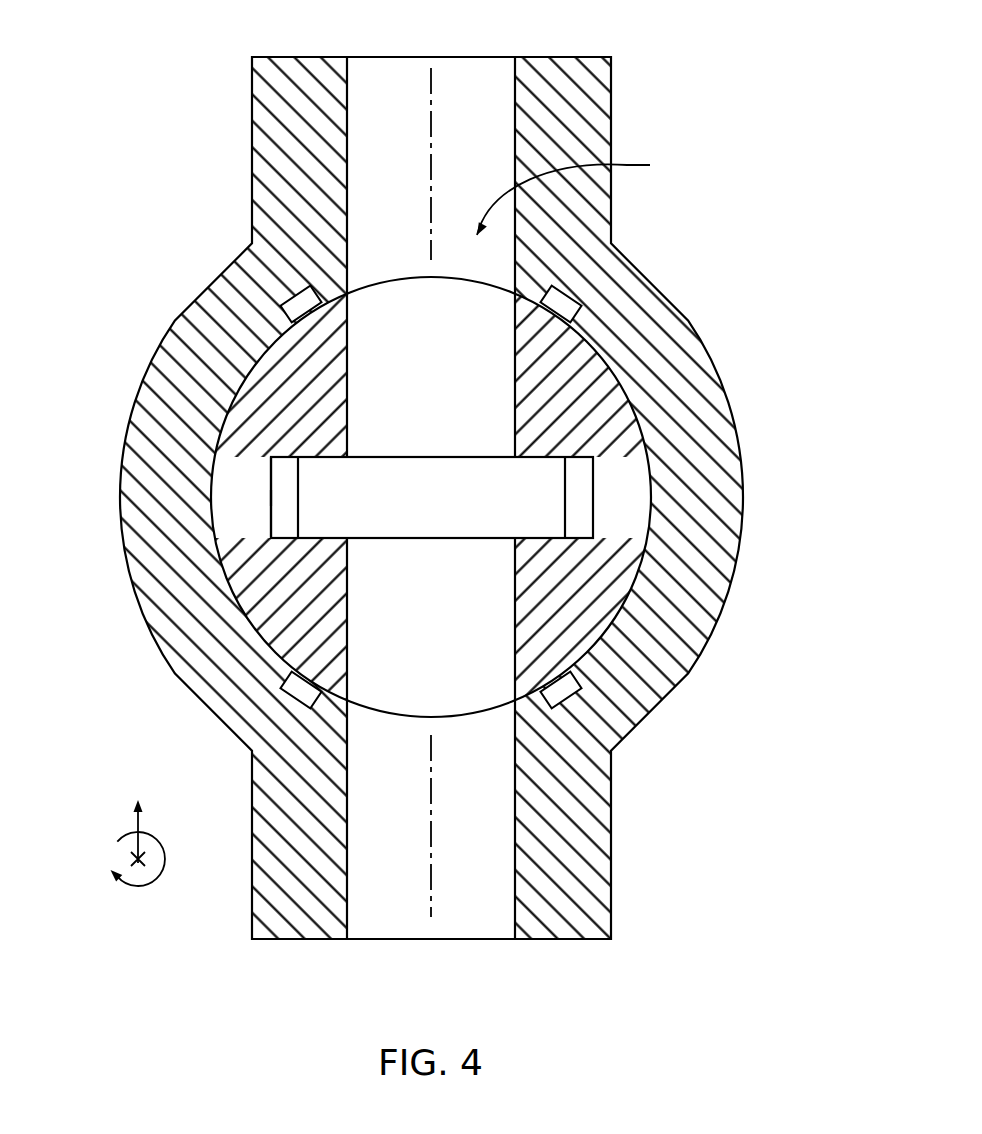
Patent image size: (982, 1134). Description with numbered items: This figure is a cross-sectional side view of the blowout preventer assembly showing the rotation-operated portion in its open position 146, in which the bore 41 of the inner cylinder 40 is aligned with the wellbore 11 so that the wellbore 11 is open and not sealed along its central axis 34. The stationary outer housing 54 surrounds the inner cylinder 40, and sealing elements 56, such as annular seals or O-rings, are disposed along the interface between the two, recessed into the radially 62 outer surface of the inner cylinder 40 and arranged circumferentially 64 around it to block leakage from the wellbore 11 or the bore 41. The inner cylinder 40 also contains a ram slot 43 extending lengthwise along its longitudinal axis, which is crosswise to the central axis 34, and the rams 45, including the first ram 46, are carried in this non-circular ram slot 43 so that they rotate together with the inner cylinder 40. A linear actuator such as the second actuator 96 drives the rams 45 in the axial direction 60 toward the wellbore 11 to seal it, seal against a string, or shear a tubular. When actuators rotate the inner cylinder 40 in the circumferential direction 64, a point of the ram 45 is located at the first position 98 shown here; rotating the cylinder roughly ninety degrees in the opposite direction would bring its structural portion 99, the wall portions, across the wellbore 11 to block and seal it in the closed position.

The wellbore 11 is at (434, 57).
The open position 146 is at (584, 194).
The central axis 34 is at (431, 848).
The outer housing 54 is at (452, 500).
The inner cylinder 40 is at (597, 352).
The bore 41 is at (348, 620).
The sealing elements 56 is at (292, 295).
The structural portion 99 is at (623, 460).
The first ram 46 is at (534, 547).
The ram slot 43 is at (565, 498).
The rams 45 is at (548, 542).
The first position 98 is at (268, 481).
The second actuator 96 is at (272, 498).
The axial direction 60 is at (131, 863).
The radial direction 62 is at (135, 824).
The circumferential direction 64 is at (165, 859).